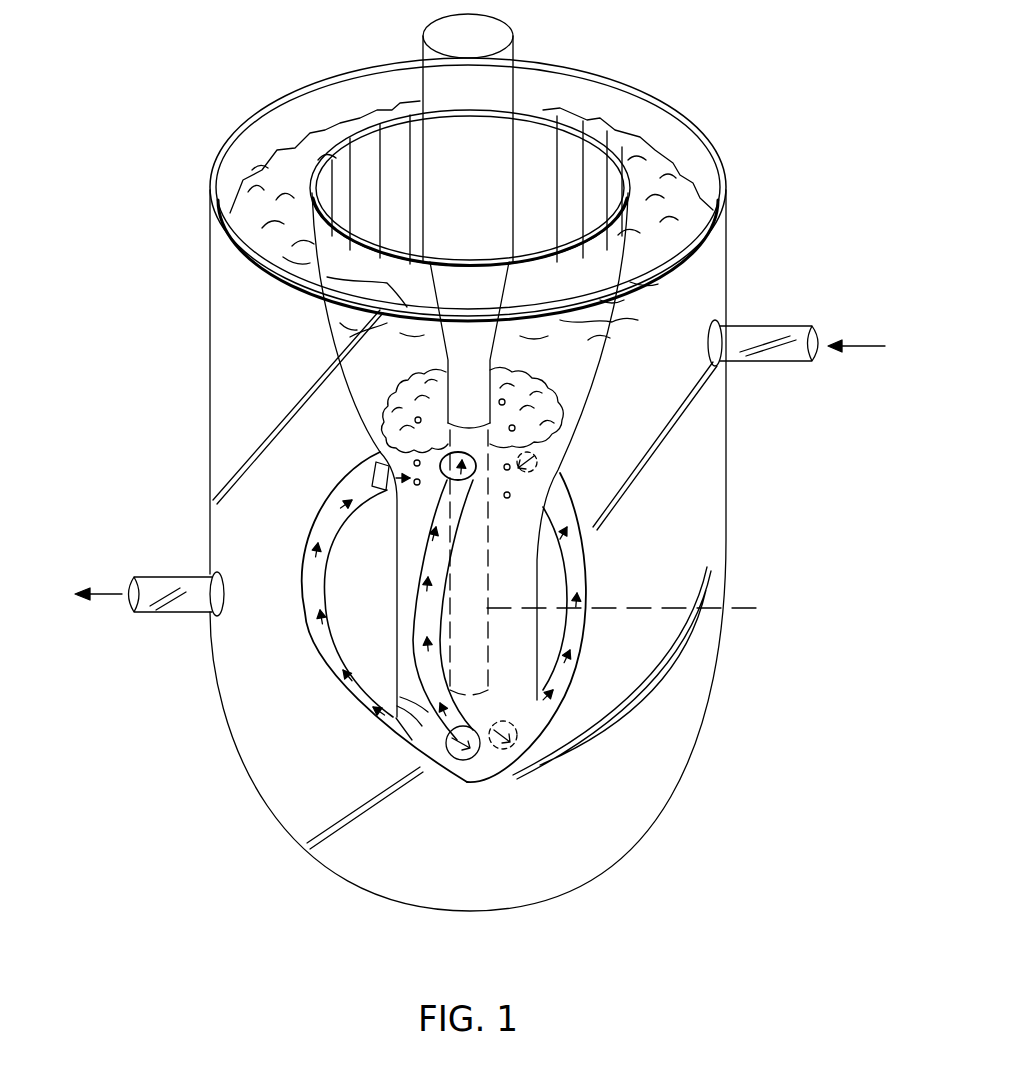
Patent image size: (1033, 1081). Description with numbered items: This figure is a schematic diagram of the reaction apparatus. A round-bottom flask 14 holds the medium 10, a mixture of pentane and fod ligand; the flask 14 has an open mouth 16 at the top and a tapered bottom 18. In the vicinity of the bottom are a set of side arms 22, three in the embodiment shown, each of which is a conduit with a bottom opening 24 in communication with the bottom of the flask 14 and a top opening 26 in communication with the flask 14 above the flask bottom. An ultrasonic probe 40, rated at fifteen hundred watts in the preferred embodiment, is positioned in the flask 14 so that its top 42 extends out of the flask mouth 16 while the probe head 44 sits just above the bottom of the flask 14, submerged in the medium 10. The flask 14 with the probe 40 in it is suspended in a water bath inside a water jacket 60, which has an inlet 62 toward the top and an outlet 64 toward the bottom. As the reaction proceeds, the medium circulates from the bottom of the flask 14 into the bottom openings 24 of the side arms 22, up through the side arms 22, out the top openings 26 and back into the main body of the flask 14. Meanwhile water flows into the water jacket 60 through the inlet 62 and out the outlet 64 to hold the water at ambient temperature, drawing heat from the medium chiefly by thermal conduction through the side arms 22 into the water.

The medium 10 is at (380, 443).
The flask 14 is at (630, 210).
The open mouth 16 is at (678, 135).
The tapered bottom 18 is at (396, 527).
The side arms 22 is at (323, 638).
The bottom opening 24 is at (460, 733).
The top opening 26 is at (582, 537).
The ultrasonic probe 40 is at (443, 80).
The top 42 is at (505, 54).
The probe head 44 is at (652, 615).
The water jacket 60 is at (707, 713).
The inlet 62 is at (785, 323).
The outlet 64 is at (153, 612).